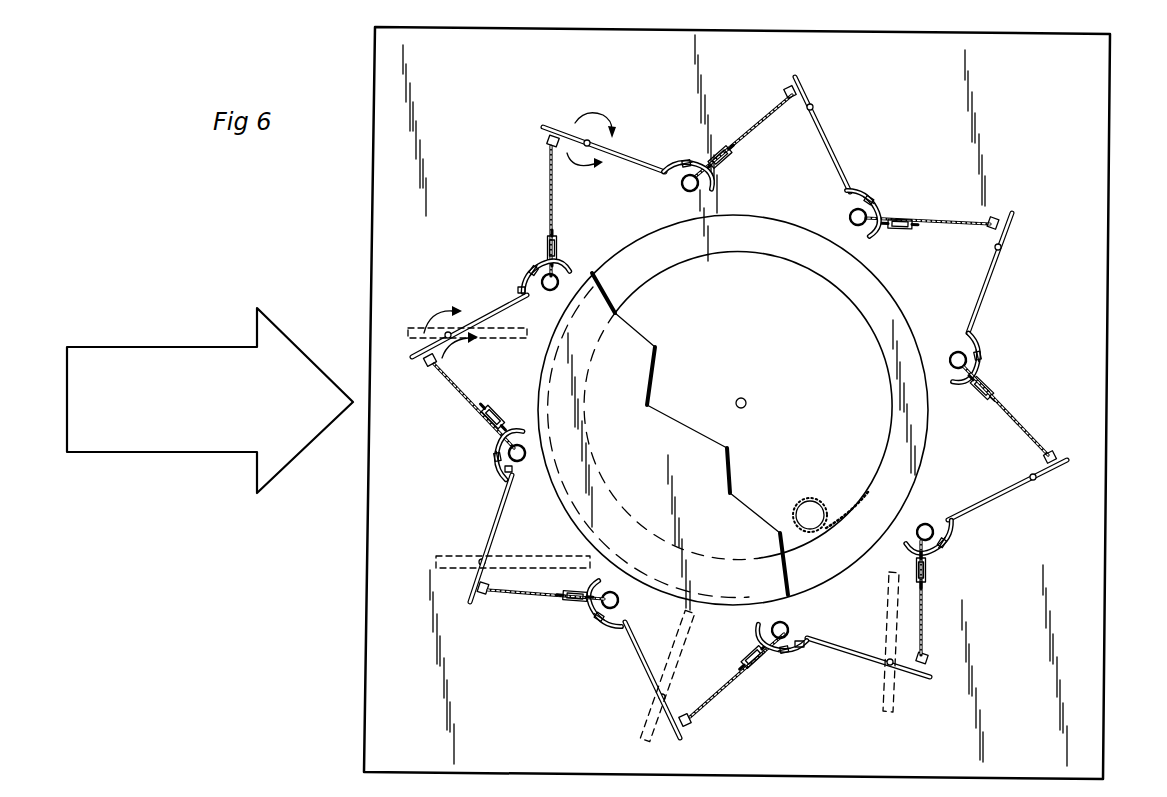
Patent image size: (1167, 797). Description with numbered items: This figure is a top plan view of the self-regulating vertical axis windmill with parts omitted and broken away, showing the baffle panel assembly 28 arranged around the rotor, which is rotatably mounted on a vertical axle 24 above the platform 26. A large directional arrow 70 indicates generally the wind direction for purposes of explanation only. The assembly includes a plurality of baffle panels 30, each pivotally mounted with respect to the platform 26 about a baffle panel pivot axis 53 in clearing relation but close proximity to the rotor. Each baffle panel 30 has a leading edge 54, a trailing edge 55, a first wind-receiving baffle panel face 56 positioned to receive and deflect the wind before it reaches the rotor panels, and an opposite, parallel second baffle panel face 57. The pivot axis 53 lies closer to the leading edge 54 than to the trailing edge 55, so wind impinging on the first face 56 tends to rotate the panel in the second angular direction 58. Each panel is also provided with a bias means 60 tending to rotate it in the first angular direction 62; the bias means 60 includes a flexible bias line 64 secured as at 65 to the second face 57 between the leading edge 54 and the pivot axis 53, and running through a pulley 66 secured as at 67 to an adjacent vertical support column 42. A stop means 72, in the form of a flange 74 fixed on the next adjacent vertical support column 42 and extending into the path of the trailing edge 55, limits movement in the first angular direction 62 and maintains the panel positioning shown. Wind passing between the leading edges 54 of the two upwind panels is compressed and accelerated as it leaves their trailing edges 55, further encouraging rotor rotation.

The vertical axle 24 is at (745, 400).
The platform 26 is at (1080, 103).
The baffle panel assembly 28 is at (818, 86).
The baffle panel 30 is at (840, 170).
The vertical support column 42 is at (700, 195).
The baffle panel pivot axis 53 is at (813, 107).
The leading edge 54 is at (543, 127).
The trailing edge 55 is at (519, 292).
The first wind-receiving baffle panel face 56 is at (506, 300).
The second baffle panel face 57 is at (495, 322).
The second angular direction 58 is at (600, 117).
The bias means 60 is at (995, 382).
The first angular direction 62 is at (587, 173).
The flexible bias line 64 is at (1020, 412).
The line securement 65 is at (1056, 457).
The pulley 66 is at (929, 570).
The pulley securement 67 is at (590, 598).
The directional arrow 70 is at (274, 388).
The stop means 72 is at (872, 197).
The flange 74 is at (799, 648).